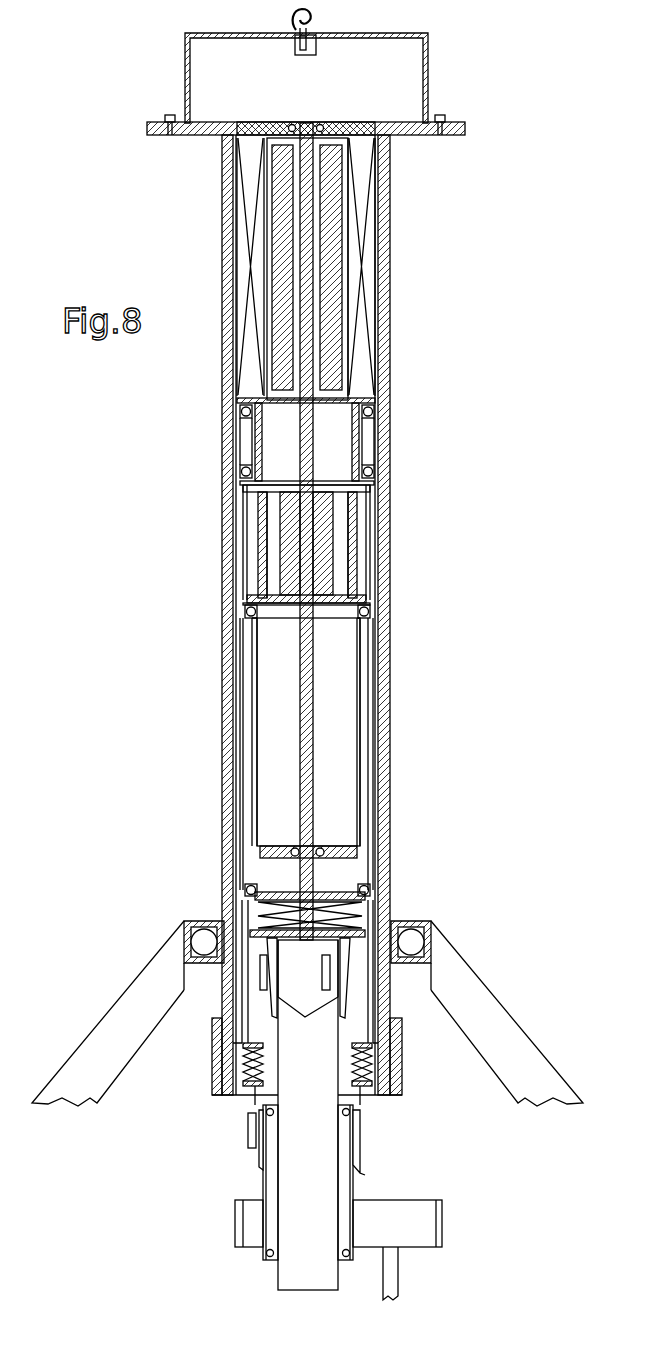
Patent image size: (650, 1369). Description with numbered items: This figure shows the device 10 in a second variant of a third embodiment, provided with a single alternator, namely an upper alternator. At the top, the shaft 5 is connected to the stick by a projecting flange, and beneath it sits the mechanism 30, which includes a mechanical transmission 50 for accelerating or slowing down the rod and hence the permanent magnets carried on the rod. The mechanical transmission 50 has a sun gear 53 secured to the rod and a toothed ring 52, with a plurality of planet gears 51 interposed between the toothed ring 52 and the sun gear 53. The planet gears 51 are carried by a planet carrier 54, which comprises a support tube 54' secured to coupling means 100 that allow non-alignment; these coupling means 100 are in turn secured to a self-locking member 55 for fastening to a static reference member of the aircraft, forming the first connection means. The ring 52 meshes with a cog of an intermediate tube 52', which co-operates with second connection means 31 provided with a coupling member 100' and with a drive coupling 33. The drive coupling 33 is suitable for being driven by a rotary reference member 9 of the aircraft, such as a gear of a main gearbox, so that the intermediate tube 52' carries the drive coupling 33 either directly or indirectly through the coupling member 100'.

The device 10 is at (465, 66).
The shaft 5 is at (390, 180).
The sun gear 53 is at (320, 490).
The toothed ring 52 is at (345, 544).
The planet gears 51 is at (360, 563).
The planet carrier 54 is at (349, 618).
The intermediate tube 52' is at (357, 754).
The support tube 54' is at (255, 732).
The mechanical transmission 50 is at (275, 622).
The coupling means 100 is at (361, 892).
The self-locking member 55 is at (350, 975).
The mechanism 30 is at (475, 528).
The connection means 31 is at (210, 1131).
The coupling member 100' is at (369, 1078).
The rotary reference member 9 is at (265, 1186).
The drive coupling 33 is at (360, 1150).